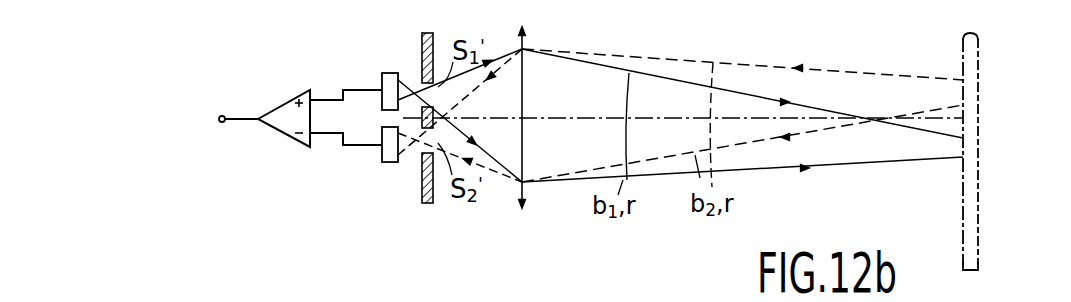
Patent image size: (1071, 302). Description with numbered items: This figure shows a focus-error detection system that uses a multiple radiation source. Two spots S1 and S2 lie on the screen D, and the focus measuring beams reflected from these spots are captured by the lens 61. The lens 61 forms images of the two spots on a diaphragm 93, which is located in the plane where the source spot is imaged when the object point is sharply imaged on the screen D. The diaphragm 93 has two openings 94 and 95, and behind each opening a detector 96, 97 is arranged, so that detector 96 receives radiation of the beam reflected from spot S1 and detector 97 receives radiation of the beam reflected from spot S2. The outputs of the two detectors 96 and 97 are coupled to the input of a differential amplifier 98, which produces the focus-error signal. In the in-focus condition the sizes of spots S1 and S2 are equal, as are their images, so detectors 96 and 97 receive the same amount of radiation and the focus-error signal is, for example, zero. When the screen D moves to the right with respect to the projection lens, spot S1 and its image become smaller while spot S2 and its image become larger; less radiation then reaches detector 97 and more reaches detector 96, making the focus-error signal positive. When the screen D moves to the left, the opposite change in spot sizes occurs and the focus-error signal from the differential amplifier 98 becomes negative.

The lens 61 is at (523, 132).
The diaphragm 93 is at (429, 103).
The opening 94 is at (425, 93).
The opening 95 is at (425, 137).
The detector 96 is at (380, 78).
The detector 97 is at (380, 155).
The differential amplifier 98 is at (283, 102).
The screen D is at (972, 135).
The spot S1 is at (960, 153).
The spot S2 is at (962, 85).